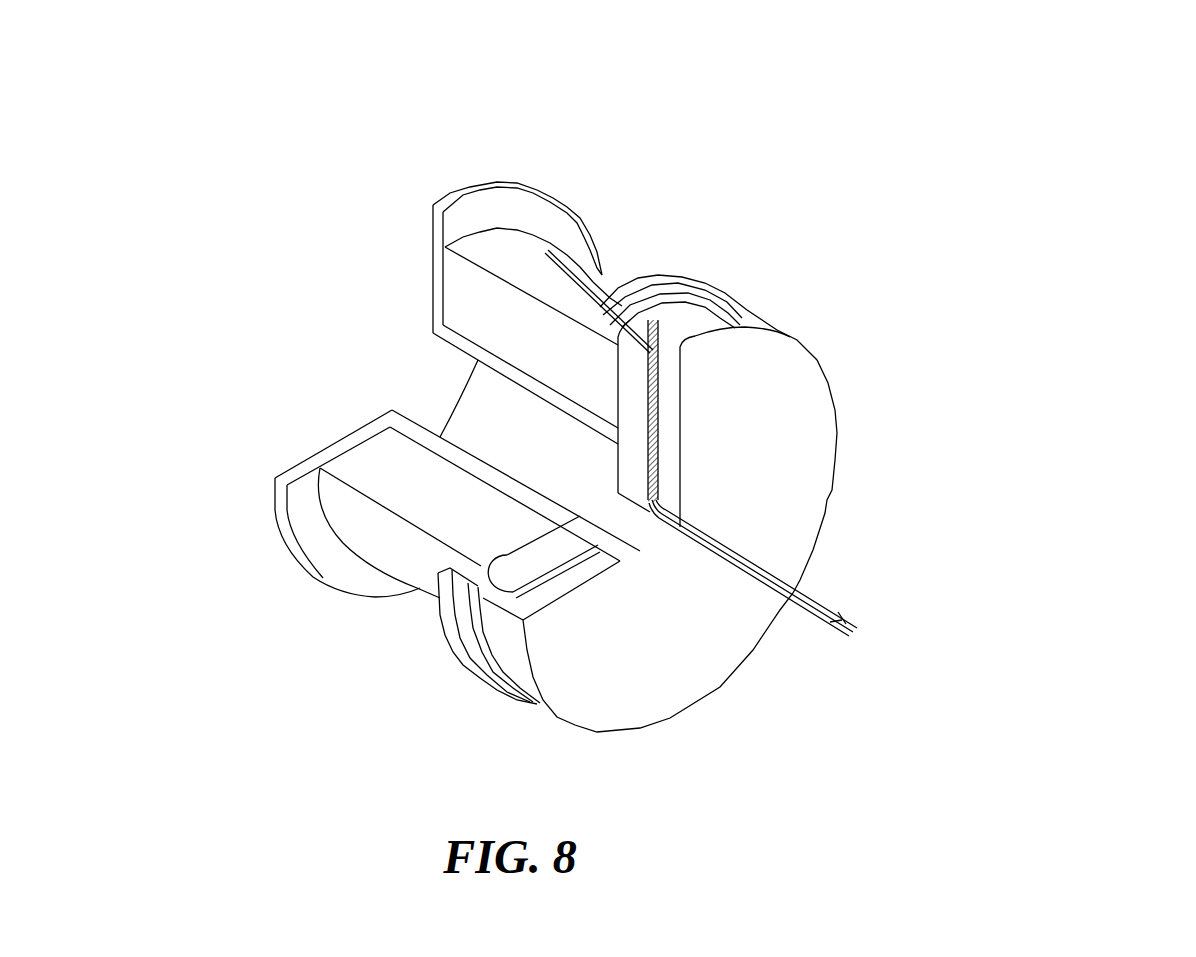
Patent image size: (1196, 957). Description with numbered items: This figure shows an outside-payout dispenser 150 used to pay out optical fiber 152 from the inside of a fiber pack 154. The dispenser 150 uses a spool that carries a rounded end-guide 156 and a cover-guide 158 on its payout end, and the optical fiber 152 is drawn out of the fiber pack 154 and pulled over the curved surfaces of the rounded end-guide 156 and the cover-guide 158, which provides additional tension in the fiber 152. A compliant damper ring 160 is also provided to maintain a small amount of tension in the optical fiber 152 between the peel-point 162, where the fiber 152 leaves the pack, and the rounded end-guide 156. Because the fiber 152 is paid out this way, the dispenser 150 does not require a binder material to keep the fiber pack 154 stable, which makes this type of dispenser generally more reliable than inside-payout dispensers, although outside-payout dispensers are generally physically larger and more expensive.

The outside-payout dispenser 150 is at (920, 270).
The optical fiber 152 is at (648, 474).
The fiber pack 154 is at (375, 467).
The rounded end-guide 156 is at (622, 372).
The cover-guide 158 is at (760, 533).
The compliant damper ring 160 is at (462, 598).
The peel-point 162 is at (556, 266).